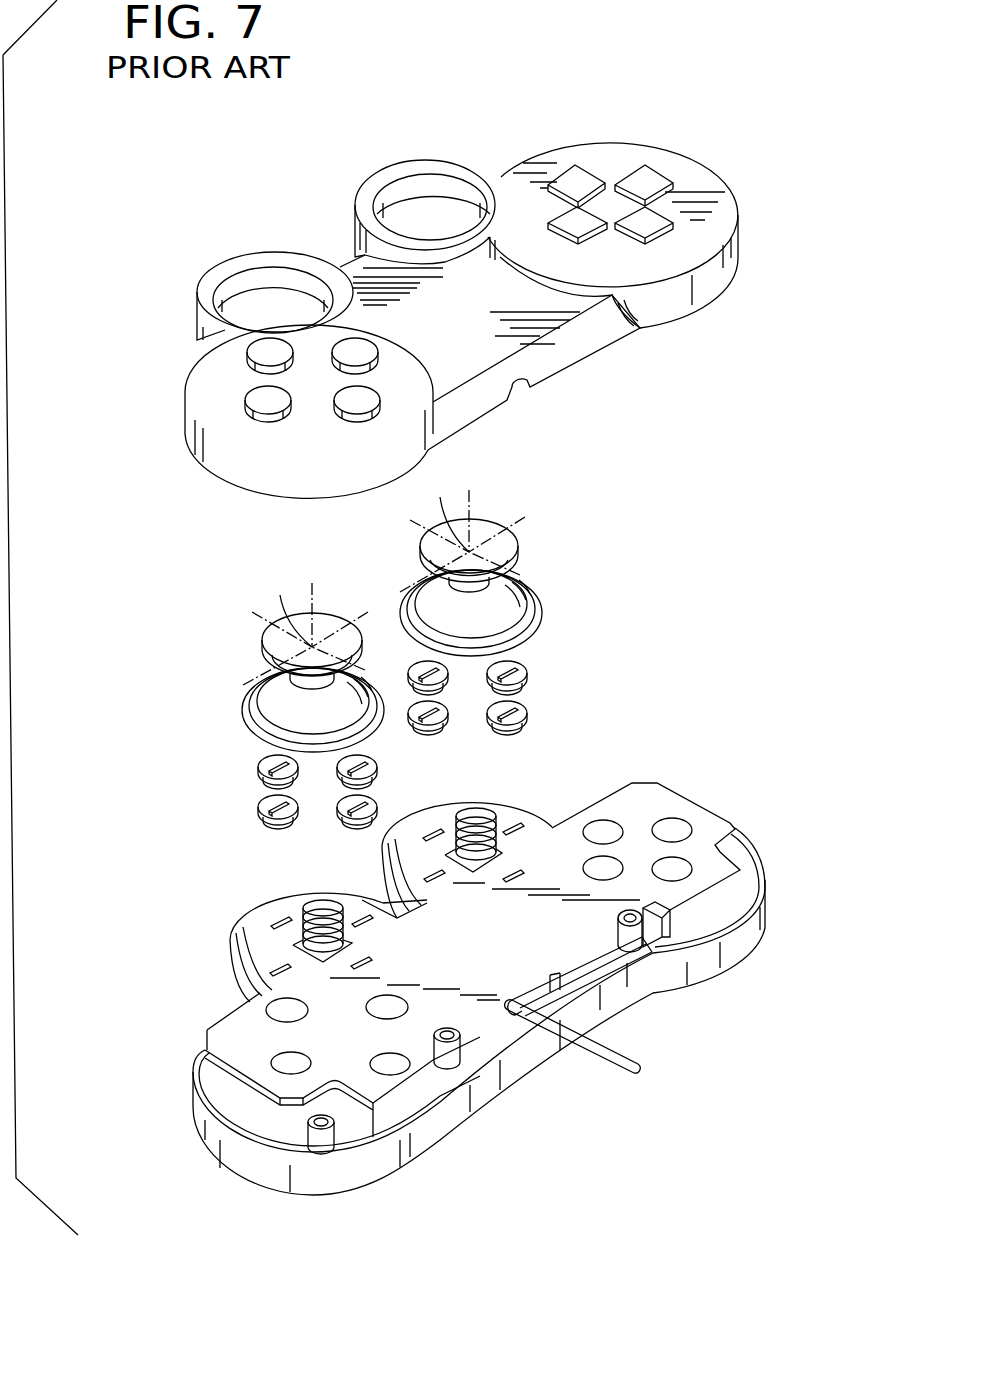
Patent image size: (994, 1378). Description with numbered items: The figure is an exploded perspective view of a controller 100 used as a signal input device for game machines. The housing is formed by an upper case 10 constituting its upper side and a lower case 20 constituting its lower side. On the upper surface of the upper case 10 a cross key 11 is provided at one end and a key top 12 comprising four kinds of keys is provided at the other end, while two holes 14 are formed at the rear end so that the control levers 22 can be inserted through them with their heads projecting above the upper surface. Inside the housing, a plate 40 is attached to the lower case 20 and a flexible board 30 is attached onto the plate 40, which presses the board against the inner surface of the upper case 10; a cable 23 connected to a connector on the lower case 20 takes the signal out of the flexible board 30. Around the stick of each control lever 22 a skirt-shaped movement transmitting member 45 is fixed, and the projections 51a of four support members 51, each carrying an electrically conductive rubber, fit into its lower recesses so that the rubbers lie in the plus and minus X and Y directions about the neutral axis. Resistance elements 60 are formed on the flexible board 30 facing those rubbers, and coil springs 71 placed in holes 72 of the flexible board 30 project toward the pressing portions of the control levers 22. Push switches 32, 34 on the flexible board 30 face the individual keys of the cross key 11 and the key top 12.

The controller 100 is at (729, 156).
The upper case 10 is at (336, 211).
The holes 14 is at (247, 273).
The cross key 11 is at (627, 182).
The key top 12 is at (265, 397).
The control levers 22 is at (524, 552).
The movement transmitting member 45 is at (509, 622).
The projections 51a is at (523, 710).
The support members 51 is at (265, 808).
The lower case 20 is at (757, 843).
The flexible board 30 is at (698, 801).
The push switches 32 is at (608, 866).
The plate 40 is at (243, 1087).
The push switches 34 is at (392, 1065).
The cable 23 is at (600, 1078).
The resistance elements 60 is at (512, 868).
The coil springs 71 is at (480, 815).
The holes 72 is at (452, 855).